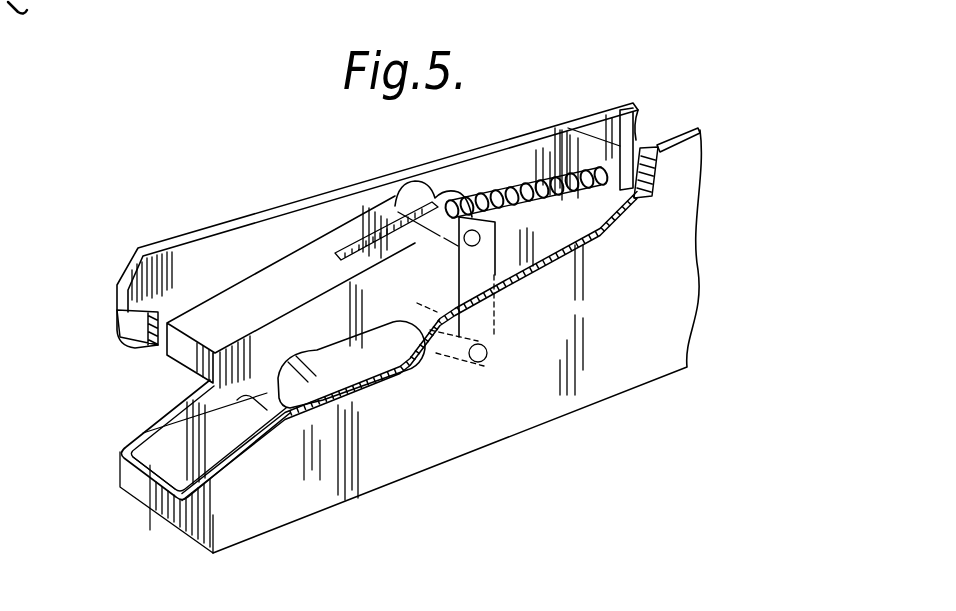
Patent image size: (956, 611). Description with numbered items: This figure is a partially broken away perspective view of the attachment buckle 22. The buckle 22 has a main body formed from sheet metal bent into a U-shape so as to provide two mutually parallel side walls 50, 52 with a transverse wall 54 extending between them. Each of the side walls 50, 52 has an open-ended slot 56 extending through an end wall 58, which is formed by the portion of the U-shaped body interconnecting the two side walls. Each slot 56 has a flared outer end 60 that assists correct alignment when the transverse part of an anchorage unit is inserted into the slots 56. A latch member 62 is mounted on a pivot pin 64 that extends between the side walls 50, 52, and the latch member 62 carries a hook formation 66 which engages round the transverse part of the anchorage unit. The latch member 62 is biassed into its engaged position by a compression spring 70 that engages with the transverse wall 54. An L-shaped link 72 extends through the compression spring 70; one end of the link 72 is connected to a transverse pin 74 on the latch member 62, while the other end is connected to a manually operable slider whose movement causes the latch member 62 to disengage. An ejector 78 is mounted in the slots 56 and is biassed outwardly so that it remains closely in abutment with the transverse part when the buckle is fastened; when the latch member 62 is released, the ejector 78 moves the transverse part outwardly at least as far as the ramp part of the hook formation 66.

The buckle 22 is at (331, 186).
The side wall 50 is at (548, 395).
The side wall 52 is at (267, 210).
The transverse wall 54 is at (618, 110).
The open-ended slot 56 is at (310, 413).
The end wall 58 is at (128, 316).
The flared outer end 60 is at (150, 424).
The latch member 62 is at (233, 310).
The pivot pin 64 is at (493, 340).
The hook formation 66 is at (130, 464).
The compression spring 70 is at (563, 143).
The L-shaped link 72 is at (520, 190).
The transverse pin 74 is at (420, 227).
The ejector 78 is at (378, 380).